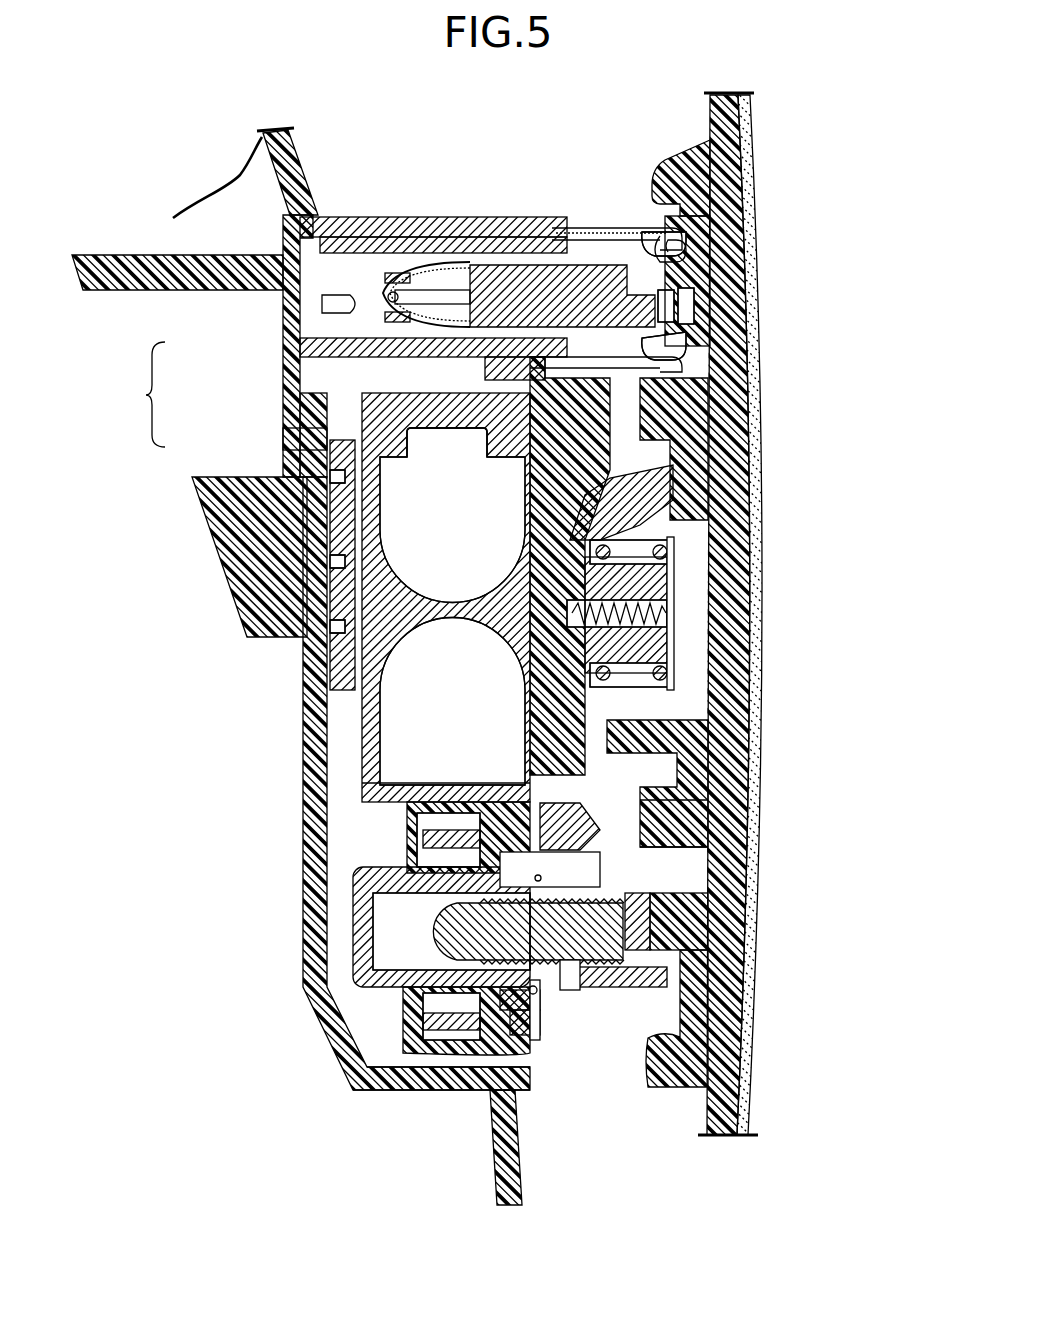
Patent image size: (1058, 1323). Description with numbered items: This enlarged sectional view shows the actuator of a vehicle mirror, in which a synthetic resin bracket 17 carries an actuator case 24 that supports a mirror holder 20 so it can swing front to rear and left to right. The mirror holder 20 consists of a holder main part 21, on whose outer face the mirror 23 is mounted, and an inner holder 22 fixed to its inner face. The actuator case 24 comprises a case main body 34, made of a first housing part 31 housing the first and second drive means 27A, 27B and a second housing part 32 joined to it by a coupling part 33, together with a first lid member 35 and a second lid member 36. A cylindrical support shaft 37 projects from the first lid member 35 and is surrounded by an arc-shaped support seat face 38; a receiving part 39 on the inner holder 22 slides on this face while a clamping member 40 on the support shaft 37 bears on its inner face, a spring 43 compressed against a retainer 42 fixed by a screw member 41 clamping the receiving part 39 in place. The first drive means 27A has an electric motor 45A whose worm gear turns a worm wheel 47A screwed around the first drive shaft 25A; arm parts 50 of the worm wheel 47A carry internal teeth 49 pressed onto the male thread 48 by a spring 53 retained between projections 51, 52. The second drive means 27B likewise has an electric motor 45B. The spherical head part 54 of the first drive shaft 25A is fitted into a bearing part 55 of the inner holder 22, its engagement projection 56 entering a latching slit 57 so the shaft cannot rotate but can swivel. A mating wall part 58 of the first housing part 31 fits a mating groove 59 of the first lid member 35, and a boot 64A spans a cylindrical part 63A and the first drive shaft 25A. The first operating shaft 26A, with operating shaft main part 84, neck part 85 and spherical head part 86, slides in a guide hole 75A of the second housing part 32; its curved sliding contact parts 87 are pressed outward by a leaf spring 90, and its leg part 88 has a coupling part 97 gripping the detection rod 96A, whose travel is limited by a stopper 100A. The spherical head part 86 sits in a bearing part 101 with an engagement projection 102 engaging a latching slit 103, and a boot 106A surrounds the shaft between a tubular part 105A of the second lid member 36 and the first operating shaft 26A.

The bracket 17 is at (312, 800).
The mirror holder 20 is at (771, 614).
The holder main part 21 is at (828, 355).
The inner holder 22 is at (668, 390).
The mirror 23 is at (678, 612).
The actuator case 24 is at (403, 836).
The first drive shaft 25A is at (445, 930).
The first operating shaft 26A is at (580, 260).
The first drive means 27A is at (442, 1092).
The second drive means 27B is at (405, 592).
The first housing part 31 is at (290, 433).
The second housing part 32 is at (283, 332).
The coupling part 33 is at (283, 395).
The case main body 34 is at (136, 394).
The first lid member 35 is at (572, 445).
The second lid member 36 is at (497, 262).
The support shaft 37 is at (680, 678).
The support seat face 38 is at (527, 692).
The receiving part 39 is at (545, 472).
The clamping member 40 is at (636, 504).
The screw member 41 is at (690, 612).
The retainer 42 is at (675, 546).
The spring 43 is at (700, 727).
The electric motor 45A is at (430, 722).
The electric motor 45B is at (432, 532).
The worm wheel 47A is at (440, 1025).
The male thread 48 is at (582, 988).
The internal teeth 49 is at (545, 880).
The arm parts 50 is at (520, 897).
The projections 51 is at (582, 806).
The projections 52 is at (538, 1022).
The spring 53 is at (540, 1040).
The spherical head part 54 is at (700, 906).
The bearing part 55 is at (640, 905).
The engagement projection 56 is at (690, 982).
The latching slit 57 is at (640, 978).
The mating wall part 58 is at (522, 1032).
The mating groove 59 is at (532, 1042).
The cylindrical part 63A is at (532, 785).
The boot 64A is at (700, 823).
The guide hole 75A is at (352, 262).
The operating shaft main part 84 is at (476, 237).
The neck part 85 is at (621, 410).
The spherical head part 86 is at (686, 300).
The curved sliding contact parts 87 is at (440, 246).
The leg part 88 is at (414, 258).
The leaf spring 90 is at (462, 342).
The detection rod 96A is at (283, 258).
The coupling part 97 is at (392, 290).
The stopper 100A is at (345, 300).
The bearing part 101 is at (697, 330).
The engagement projection 102 is at (688, 258).
The latching slit 103 is at (700, 182).
The tubular part 105A is at (562, 230).
The boot 106A is at (662, 240).